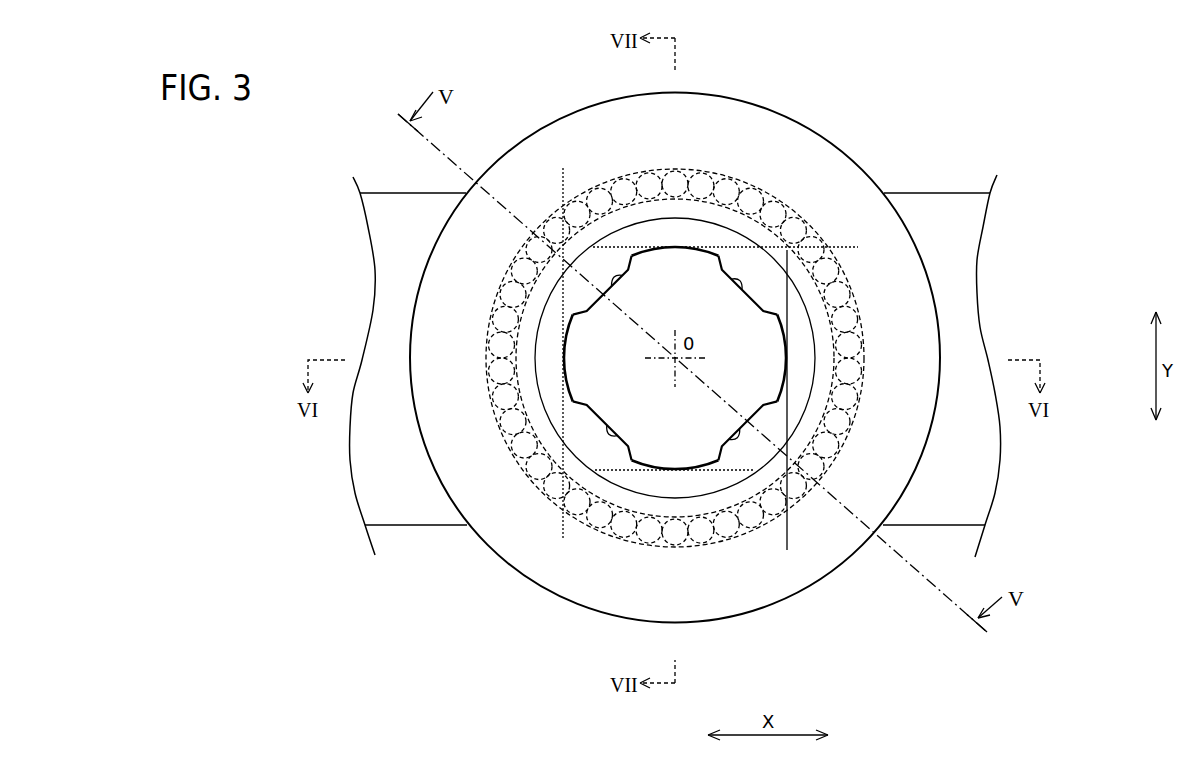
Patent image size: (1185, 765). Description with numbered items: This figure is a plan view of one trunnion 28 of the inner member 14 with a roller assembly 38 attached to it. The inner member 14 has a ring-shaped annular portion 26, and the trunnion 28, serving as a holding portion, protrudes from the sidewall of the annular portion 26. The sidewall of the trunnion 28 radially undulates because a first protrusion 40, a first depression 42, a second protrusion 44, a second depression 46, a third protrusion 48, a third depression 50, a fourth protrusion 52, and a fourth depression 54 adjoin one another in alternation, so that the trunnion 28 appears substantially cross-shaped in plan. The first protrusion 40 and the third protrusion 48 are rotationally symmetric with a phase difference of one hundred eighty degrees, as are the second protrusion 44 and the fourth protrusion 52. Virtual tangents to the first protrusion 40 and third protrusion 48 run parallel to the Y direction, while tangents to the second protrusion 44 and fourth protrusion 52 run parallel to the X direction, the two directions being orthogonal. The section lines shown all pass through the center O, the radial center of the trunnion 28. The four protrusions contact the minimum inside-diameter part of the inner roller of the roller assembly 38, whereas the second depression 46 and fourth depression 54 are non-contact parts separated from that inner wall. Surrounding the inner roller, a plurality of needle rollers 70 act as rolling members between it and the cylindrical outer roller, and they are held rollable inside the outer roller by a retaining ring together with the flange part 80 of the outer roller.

The inner member 14 is at (955, 532).
The annular portion 26 is at (935, 205).
The trunnion 28 is at (762, 336).
The roller assembly 38 is at (767, 106).
The first protrusion 40 is at (582, 358).
The first depression 42 is at (610, 430).
The second protrusion 44 is at (678, 458).
The second depression 46 is at (734, 436).
The third protrusion 48 is at (773, 358).
The third depression 50 is at (739, 287).
The fourth protrusion 52 is at (668, 262).
The fourth depression 54 is at (619, 278).
The needle roller 70 is at (758, 188).
The flange part 80 is at (846, 388).